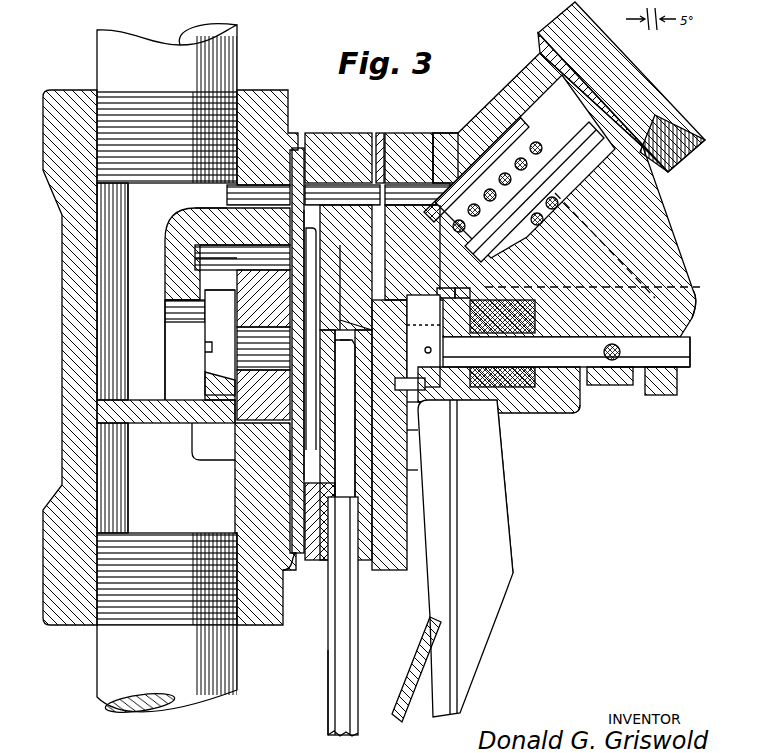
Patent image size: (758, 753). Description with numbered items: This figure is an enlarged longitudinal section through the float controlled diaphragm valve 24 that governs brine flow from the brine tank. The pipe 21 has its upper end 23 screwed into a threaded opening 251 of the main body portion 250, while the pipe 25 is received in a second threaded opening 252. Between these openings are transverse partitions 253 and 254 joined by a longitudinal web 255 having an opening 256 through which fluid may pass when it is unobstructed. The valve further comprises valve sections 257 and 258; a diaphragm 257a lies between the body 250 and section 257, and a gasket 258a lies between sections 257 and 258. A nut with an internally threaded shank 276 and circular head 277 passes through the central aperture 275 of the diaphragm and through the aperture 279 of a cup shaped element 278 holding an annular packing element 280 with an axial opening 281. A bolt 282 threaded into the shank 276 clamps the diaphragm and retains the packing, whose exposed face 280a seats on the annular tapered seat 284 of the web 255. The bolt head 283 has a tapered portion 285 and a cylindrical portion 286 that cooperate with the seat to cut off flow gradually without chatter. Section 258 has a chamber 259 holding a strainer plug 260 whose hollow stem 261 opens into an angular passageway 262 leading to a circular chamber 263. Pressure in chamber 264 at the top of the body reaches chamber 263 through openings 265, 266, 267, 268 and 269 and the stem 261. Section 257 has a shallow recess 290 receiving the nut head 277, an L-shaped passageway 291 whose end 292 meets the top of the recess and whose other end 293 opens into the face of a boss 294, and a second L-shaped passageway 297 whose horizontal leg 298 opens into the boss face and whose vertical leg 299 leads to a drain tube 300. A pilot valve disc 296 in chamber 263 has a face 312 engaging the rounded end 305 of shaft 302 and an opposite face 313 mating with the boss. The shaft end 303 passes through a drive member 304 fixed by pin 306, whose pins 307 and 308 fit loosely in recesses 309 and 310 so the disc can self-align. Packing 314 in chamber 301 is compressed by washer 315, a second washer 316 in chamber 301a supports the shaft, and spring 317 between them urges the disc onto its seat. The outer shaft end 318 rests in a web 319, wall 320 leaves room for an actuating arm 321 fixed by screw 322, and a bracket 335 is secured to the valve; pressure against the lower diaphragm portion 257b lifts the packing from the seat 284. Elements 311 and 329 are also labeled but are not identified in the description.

The pipe 21 is at (203, 715).
The opposite end of piping 23 is at (105, 678).
The float controlled diaphragm valve 24 is at (62, 404).
The pipe 25 is at (105, 57).
The main body portion 250 is at (62, 275).
The threaded opening 251 is at (97, 530).
The second threaded opening 252 is at (97, 128).
The transverse partition 253 is at (215, 204).
The transverse partition 254 is at (140, 406).
The longitudinal web 255 is at (170, 268).
The opening 256 is at (172, 352).
The valve section 257 is at (340, 134).
The diaphragm 257a is at (298, 148).
The lower portion of diaphragm 257b is at (290, 456).
The valve section 258 is at (406, 133).
The gasket 258a is at (381, 133).
The chamber 259 is at (488, 106).
The strainer plug 260 is at (652, 95).
The hollow stem 261 is at (476, 169).
The angular passageway 262 is at (432, 288).
The circular chamber 263 is at (456, 440).
The chamber 264 is at (115, 215).
The opening 265 is at (252, 185).
The opening 266 is at (258, 195).
The opening 267 is at (342, 195).
The opening 268 is at (417, 195).
The opening 269 is at (450, 128).
The central aperture 275 is at (314, 345).
The internally threaded shank 276 is at (320, 412).
The circular head 277 is at (311, 320).
The metallic cup shaped element 278 is at (242, 257).
The aperture 279 is at (216, 264).
The annular packing element 280 is at (250, 420).
The exposed face of packing 280a is at (237, 410).
The axial opening 281 is at (263, 348).
The bolt 282 is at (263, 298).
The head 283 is at (208, 384).
The annular tapered seat 284 is at (168, 315).
The annular tapered portion 285 is at (215, 300).
The cylindrical portion 286 is at (232, 298).
The shallow circular recess 290 is at (306, 565).
The L-shaped passageway 291 is at (362, 318).
The end of passageway 292 is at (340, 245).
The opposite end of passageway 293 is at (353, 312).
The boss 294 is at (413, 480).
The disc type pilot valve 296 is at (500, 438).
The L-shaped passageway 297 is at (358, 430).
The horizontal leg 298 is at (356, 348).
The vertical leg 299 is at (349, 488).
The exhaust or drain tube 300 is at (326, 668).
The chamber 301 is at (545, 414).
The chamber 301a is at (515, 238).
The shaft 302 is at (690, 364).
The end of shaft 303 is at (566, 350).
The drive member 304 is at (424, 341).
The rounded end 305 is at (476, 343).
The pin 306 is at (432, 350).
The longitudinally extending pin 307 is at (455, 292).
The longitudinally extending pin 308 is at (412, 410).
The recess 309 is at (389, 435).
The recess 310 is at (405, 378).
The cam 311 is at (437, 290).
The face 312 is at (424, 332).
The opposite face 313 is at (356, 388).
The packing 314 is at (582, 408).
The washer 315 is at (492, 414).
The second washer 316 is at (485, 420).
The spring 317 is at (515, 288).
The outer end of shaft 318 is at (690, 340).
The web 319 is at (698, 296).
The wall 320 is at (590, 387).
The actuating arm 321 is at (661, 396).
The screw 322 is at (612, 344).
The slot 329 is at (414, 445).
The bracket 335 is at (503, 565).